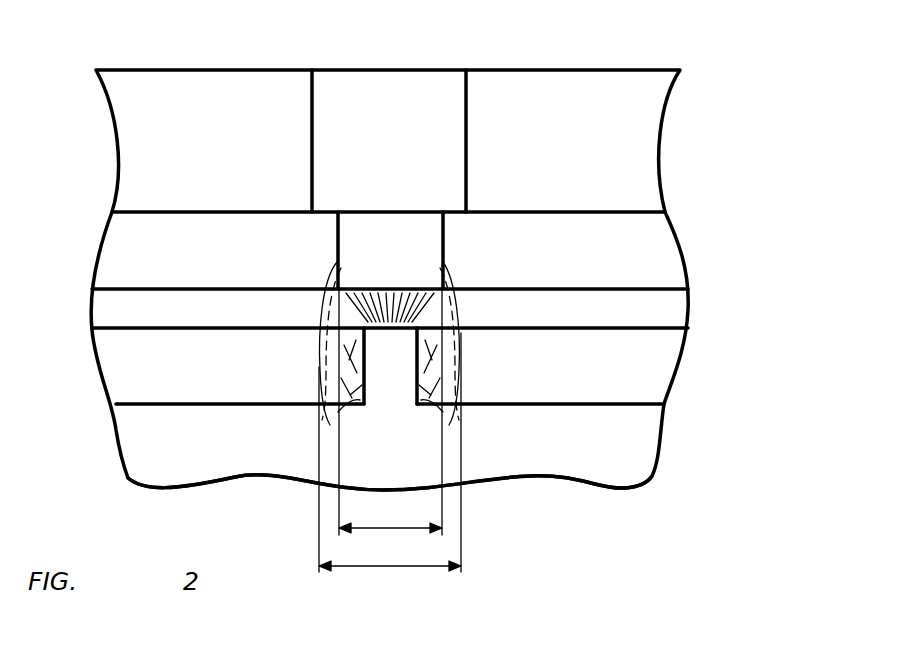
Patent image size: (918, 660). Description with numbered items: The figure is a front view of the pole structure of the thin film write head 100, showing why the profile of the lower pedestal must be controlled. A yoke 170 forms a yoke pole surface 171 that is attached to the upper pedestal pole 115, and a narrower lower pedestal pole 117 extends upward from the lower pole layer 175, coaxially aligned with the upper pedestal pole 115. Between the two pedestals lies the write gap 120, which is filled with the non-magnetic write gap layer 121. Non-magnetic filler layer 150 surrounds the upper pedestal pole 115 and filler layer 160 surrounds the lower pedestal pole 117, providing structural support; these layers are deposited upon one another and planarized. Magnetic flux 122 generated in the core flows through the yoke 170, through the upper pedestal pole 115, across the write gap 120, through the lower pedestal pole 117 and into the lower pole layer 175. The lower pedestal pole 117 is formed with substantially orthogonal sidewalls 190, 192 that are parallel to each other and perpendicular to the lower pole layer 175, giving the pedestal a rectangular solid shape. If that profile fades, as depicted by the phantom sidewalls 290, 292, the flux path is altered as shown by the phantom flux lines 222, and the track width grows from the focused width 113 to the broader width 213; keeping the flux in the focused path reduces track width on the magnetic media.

The thin film write head 100 is at (638, 53).
The yoke 170 is at (327, 92).
The yoke pole surface 171 is at (455, 213).
The upper pedestal pole 115 is at (390, 222).
The write gap 120 is at (383, 300).
The magnetic flux 122 is at (410, 298).
The filler layer 150 is at (665, 253).
The write gap layer 121 is at (666, 312).
The filler layer 160 is at (665, 362).
The lower pole layer 175 is at (652, 454).
The phantom flux lines 222 is at (322, 304).
The sidewall 190 is at (345, 340).
The sidewall 192 is at (437, 341).
The phantom sidewall 290 is at (354, 400).
The phantom sidewall 292 is at (428, 402).
The lower pedestal pole 117 is at (393, 362).
The width 113 is at (400, 528).
The track width 213 is at (404, 566).